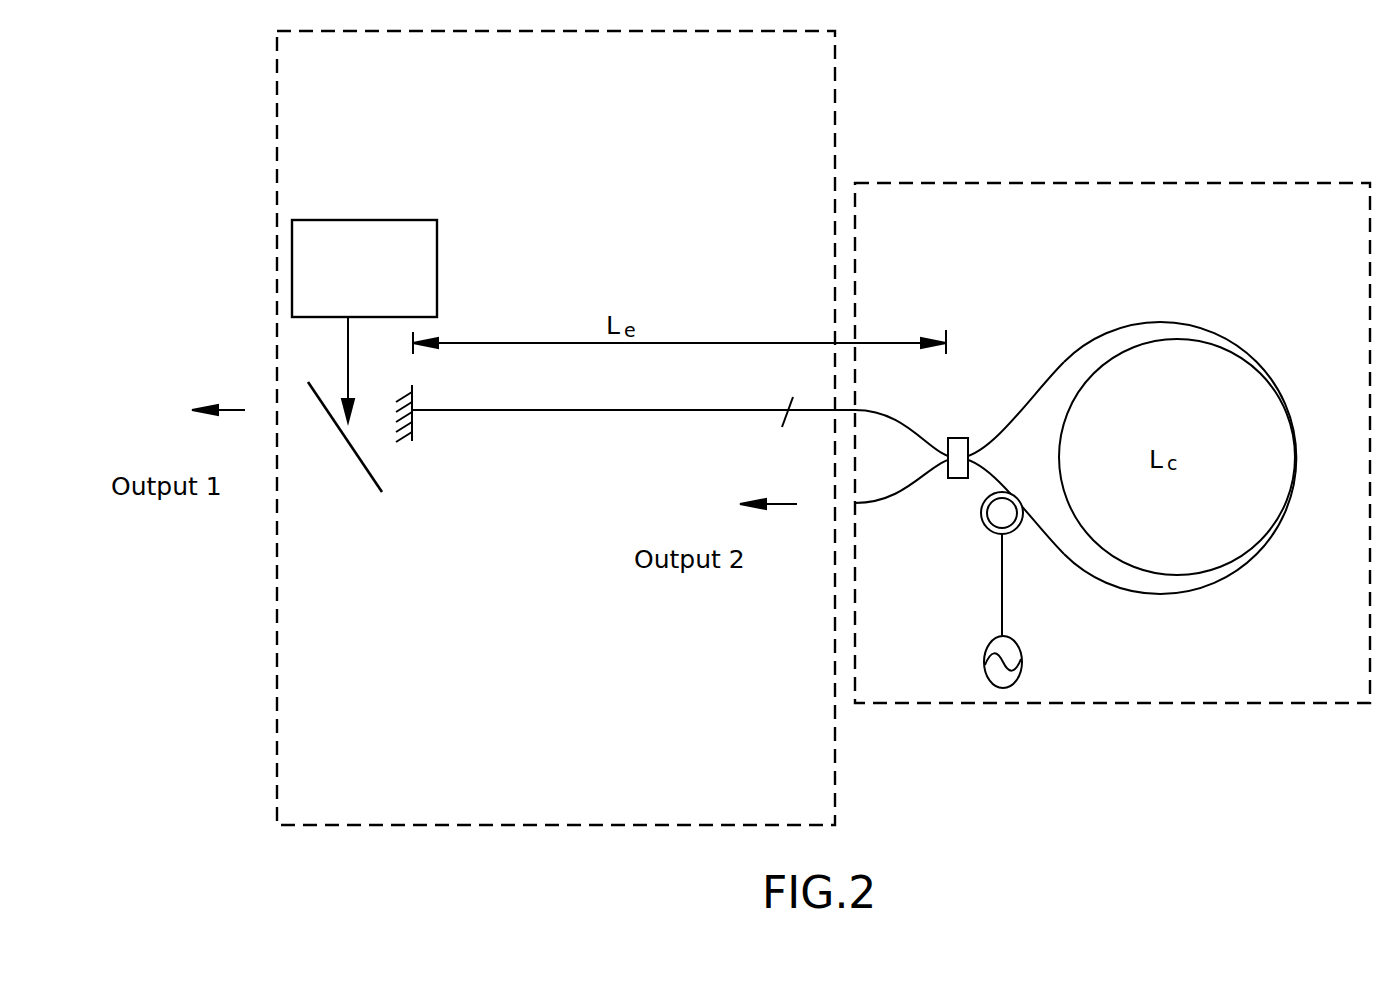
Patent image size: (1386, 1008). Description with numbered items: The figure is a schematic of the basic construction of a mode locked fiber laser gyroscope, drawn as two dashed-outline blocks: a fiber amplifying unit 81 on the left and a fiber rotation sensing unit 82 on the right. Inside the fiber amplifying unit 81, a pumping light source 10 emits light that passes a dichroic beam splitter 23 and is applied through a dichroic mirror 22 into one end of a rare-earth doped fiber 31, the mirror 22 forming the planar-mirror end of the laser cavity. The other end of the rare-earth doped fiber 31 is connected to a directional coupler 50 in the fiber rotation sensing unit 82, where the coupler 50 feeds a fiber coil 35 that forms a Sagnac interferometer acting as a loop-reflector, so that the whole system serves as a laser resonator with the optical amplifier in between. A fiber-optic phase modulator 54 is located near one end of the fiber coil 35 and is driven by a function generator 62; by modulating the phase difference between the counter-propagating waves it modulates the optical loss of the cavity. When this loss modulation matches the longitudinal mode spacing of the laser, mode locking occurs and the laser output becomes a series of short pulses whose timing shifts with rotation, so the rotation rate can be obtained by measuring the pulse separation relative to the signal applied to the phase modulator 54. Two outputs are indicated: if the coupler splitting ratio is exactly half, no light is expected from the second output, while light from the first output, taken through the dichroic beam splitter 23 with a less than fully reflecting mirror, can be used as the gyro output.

The pumping light source 10 is at (360, 220).
The dichroic mirror 22 is at (410, 442).
The dichroic beam splitter 23 is at (357, 460).
The rare-earth doped fiber 31 is at (598, 410).
The fiber coil 35 is at (1222, 556).
The directional coupler 50 is at (958, 448).
The phase modulator 54 is at (992, 531).
The function generator 62 is at (1003, 688).
The fiber amplifying unit 81 is at (798, 83).
The fiber rotation sensing unit 82 is at (1157, 203).